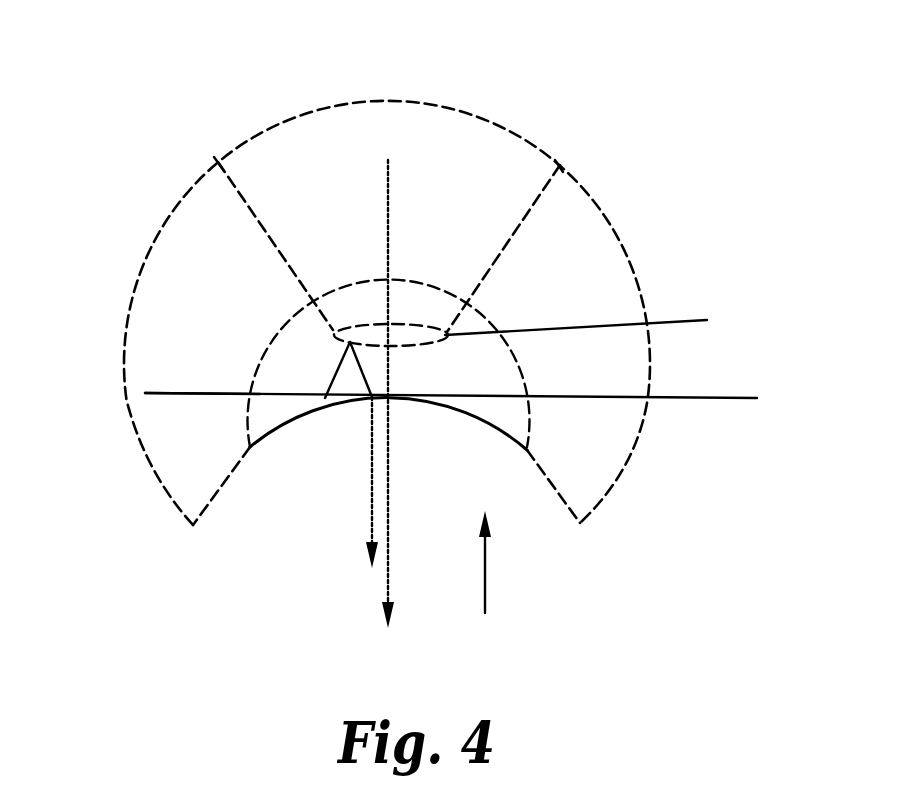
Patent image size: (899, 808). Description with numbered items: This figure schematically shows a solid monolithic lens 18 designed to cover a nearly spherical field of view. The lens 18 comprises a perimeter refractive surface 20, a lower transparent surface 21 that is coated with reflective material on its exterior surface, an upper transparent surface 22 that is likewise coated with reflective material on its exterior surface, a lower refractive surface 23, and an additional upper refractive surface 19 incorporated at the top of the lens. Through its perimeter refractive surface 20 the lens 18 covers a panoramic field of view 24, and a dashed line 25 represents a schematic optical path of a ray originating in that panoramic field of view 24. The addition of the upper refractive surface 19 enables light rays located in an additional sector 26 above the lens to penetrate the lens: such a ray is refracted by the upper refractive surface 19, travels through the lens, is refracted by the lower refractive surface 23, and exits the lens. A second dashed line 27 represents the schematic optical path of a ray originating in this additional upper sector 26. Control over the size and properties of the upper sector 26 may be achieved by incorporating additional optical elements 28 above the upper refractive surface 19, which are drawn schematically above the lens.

The lens 18 is at (490, 583).
The upper refractive surface 19 is at (398, 337).
The perimeter refractive surface 20 is at (476, 403).
The lower transparent surface 21 is at (268, 432).
The upper transparent surface 22 is at (603, 326).
The lower refractive surface 23 is at (452, 413).
The panoramic field of view 24 is at (135, 281).
The dashed line 25 is at (198, 395).
The additional sector 26 is at (292, 118).
The second dashed line 27 is at (392, 220).
The additional optical elements 28 is at (368, 323).